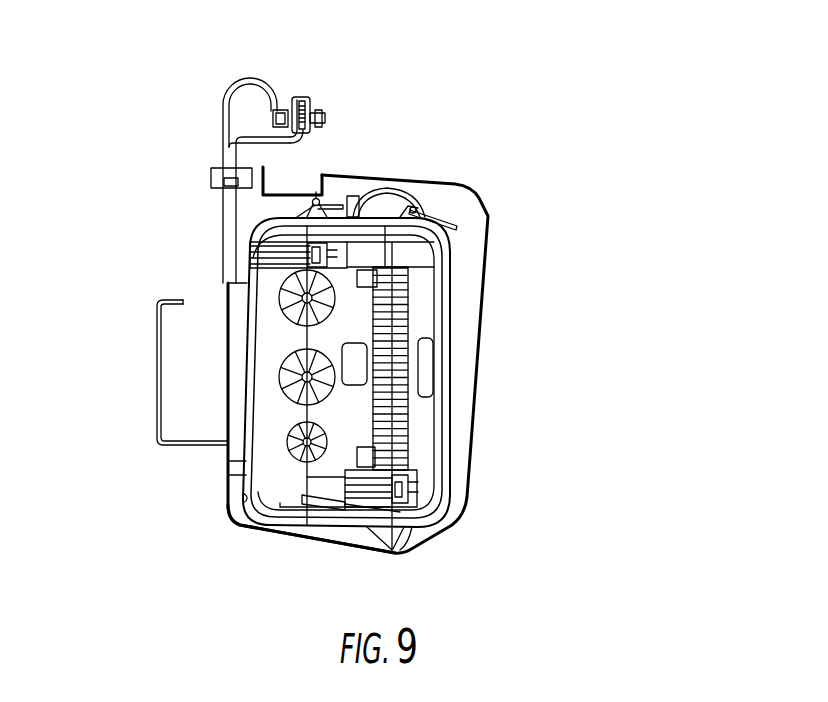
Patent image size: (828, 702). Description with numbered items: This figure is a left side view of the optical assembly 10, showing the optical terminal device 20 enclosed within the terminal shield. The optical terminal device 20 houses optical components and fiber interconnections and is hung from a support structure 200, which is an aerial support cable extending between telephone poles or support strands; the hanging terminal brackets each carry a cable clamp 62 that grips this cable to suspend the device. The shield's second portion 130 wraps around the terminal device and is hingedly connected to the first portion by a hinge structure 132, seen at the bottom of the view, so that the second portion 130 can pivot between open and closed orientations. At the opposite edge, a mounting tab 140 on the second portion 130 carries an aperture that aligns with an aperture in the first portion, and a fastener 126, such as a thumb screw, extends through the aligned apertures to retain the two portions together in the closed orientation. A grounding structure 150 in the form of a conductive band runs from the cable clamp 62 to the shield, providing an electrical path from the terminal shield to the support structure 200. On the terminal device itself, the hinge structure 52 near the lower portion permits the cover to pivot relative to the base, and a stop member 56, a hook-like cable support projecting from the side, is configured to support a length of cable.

The optical assembly 10 is at (505, 185).
The optical terminal device 20 is at (460, 315).
The hinge structure 52 is at (410, 548).
The stop member 56 is at (156, 377).
The cable clamp 62 is at (308, 93).
The fastener 126 is at (211, 180).
The second portion 130 is at (495, 255).
The hinge structure 132 is at (260, 538).
The mounting tab 140 is at (266, 180).
The grounding structure 150 is at (231, 73).
The support structure 200 is at (305, 140).